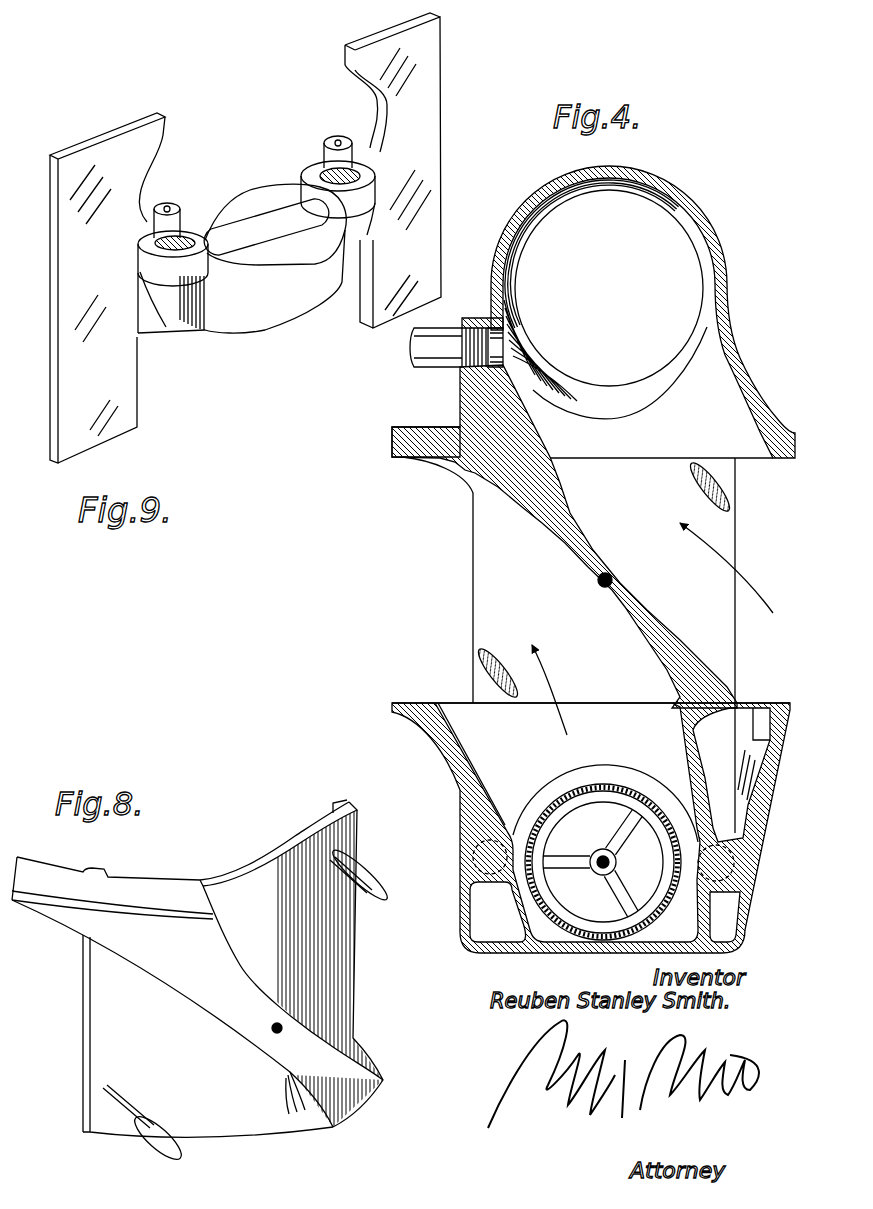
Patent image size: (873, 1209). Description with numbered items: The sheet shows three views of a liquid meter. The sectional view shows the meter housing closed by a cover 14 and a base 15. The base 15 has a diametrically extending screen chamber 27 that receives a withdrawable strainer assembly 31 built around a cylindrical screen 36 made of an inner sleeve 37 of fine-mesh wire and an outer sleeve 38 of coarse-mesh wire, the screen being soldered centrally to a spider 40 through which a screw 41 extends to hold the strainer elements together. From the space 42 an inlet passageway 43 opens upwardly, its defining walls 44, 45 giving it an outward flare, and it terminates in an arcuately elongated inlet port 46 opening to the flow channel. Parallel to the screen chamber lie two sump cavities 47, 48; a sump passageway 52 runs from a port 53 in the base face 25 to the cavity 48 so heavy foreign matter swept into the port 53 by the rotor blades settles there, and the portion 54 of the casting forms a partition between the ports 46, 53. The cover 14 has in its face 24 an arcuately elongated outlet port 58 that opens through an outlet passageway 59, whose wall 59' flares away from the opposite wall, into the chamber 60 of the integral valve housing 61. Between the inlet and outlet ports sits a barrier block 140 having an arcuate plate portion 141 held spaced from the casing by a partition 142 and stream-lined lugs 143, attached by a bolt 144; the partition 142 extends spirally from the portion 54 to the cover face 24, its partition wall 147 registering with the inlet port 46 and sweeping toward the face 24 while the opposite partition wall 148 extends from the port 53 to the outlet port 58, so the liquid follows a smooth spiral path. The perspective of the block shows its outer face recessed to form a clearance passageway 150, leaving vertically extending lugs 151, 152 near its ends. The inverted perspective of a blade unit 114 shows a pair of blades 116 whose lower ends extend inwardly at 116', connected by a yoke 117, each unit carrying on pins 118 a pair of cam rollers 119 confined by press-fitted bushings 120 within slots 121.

In FIG. 4, the cover 14 is at (392, 440).
In FIG. 4, the base 15 is at (460, 828).
In FIG. 4, the cover face 24 is at (448, 447).
In FIG. 4, the base face 25 is at (722, 758).
In FIG. 4, the screen chamber 27 is at (520, 813).
In FIG. 4, the strainer assembly 31 is at (547, 805).
In FIG. 4, the cylindrical screen 36 is at (648, 779).
In FIG. 4, the inner sleeve 37 is at (600, 792).
In FIG. 4, the outer sleeve 38 is at (588, 807).
In FIG. 4, the spider 40 is at (570, 858).
In FIG. 4, the screw 41 is at (612, 862).
In FIG. 4, the space 42 is at (547, 787).
In FIG. 4, the inlet passageway 43 is at (493, 730).
In FIG. 4, the defining wall 44 is at (450, 740).
In FIG. 4, the defining wall 45 is at (677, 722).
In FIG. 4, the inlet port 46 is at (452, 700).
In FIG. 4, the sump cavity 47 is at (478, 914).
In FIG. 4, the sump cavity 48 is at (722, 915).
In FIG. 4, the sump passageway 52 is at (722, 820).
In FIG. 4, the port 53 is at (750, 708).
In FIG. 4, the partition portion 54 is at (723, 707).
In FIG. 4, the outlet port 58 is at (663, 452).
In FIG. 4, the outlet passageway 59 is at (705, 386).
In FIG. 4, the wall 59' is at (746, 380).
In FIG. 4, the chamber 60 is at (660, 290).
In FIG. 4, the valve housing 61 is at (703, 228).
In FIG. 9, the blade unit 114 is at (117, 97).
In FIG. 9, the blade 116 is at (257, 238).
In FIG. 9, the inwardly extending blade end 116' is at (266, 114).
In FIG. 9, the yoke 117 is at (277, 295).
In FIG. 9, the pin 118 is at (167, 206).
In FIG. 9, the cam roller 119 is at (185, 245).
In FIG. 9, the bushing 120 is at (182, 240).
In FIG. 9, the slot 121 is at (138, 265).
In FIG. 4, the barrier block 140 is at (462, 545).
In FIG. 8, the barrier block 140 is at (248, 860).
In FIG. 4, the arcuate plate portion 141 is at (723, 550).
In FIG. 8, the arcuate plate portion 141 is at (273, 865).
In FIG. 4, the partition 142 is at (587, 552).
In FIG. 8, the partition 142 is at (240, 983).
In FIG. 4, the stream-lined lug 143 is at (713, 493).
In FIG. 8, the stream-lined lug 143 is at (363, 860).
In FIG. 4, the bolt 144 is at (613, 580).
In FIG. 4, the partition wall 147 is at (555, 547).
In FIG. 8, the partition wall 147 is at (290, 1095).
In FIG. 4, the partition wall 148 is at (653, 610).
In FIG. 8, the partition wall 148 is at (333, 1047).
In FIG. 8, the clearance passageway 150 is at (203, 845).
In FIG. 8, the lug 151 is at (335, 810).
In FIG. 8, the lug 152 is at (100, 872).